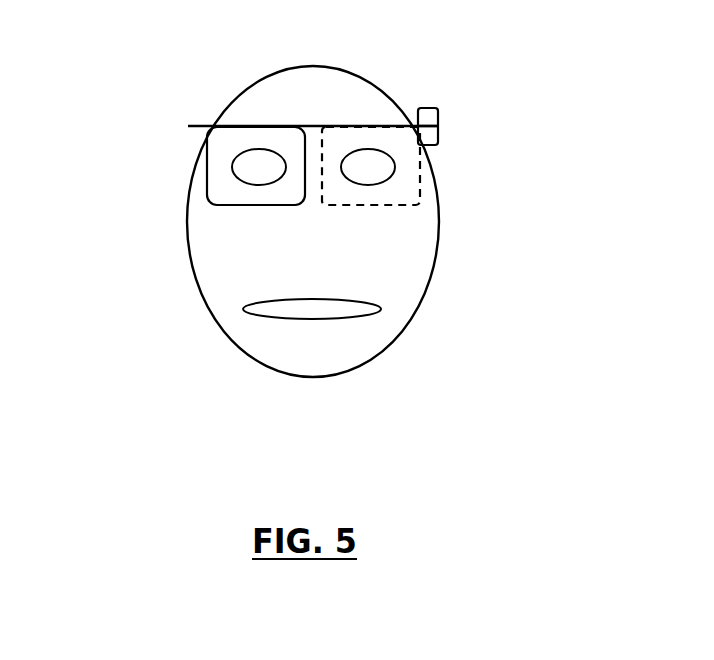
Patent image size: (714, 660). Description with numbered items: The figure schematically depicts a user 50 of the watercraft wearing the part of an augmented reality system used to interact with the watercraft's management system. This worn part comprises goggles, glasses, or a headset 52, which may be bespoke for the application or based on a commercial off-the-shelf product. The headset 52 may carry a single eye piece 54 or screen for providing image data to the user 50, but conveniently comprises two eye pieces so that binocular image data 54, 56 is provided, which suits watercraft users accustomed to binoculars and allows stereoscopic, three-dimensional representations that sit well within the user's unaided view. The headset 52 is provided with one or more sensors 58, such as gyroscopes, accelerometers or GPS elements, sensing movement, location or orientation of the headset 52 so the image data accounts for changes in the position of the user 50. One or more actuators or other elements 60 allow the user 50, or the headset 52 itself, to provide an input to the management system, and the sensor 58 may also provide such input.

The user 50 is at (428, 325).
The goggles, glasses, or headset 52 is at (187, 124).
The eye piece 54 is at (212, 176).
The second eye piece 56 is at (412, 193).
The sensor 58 is at (447, 117).
The actuator or other element 60 is at (447, 135).